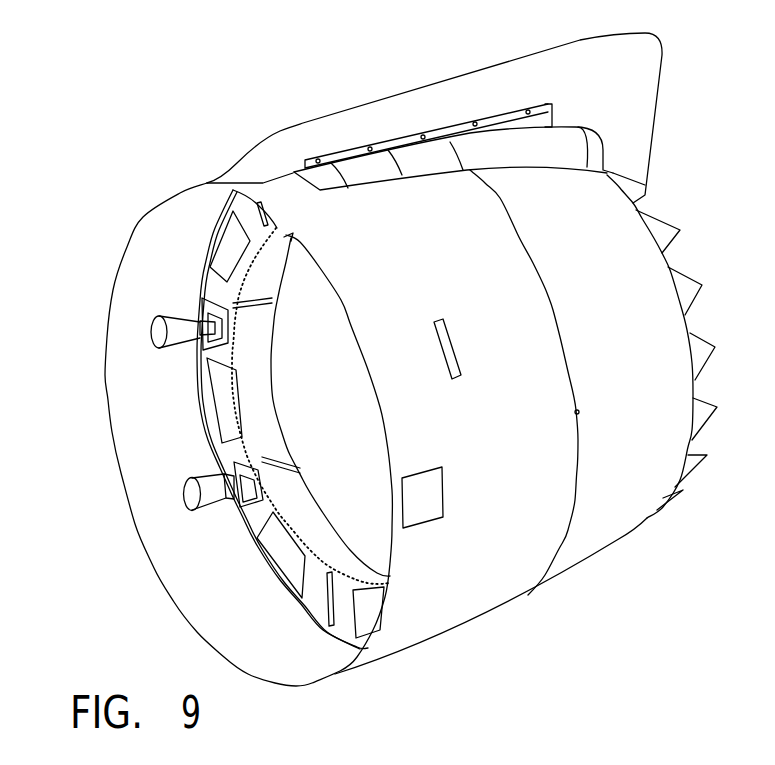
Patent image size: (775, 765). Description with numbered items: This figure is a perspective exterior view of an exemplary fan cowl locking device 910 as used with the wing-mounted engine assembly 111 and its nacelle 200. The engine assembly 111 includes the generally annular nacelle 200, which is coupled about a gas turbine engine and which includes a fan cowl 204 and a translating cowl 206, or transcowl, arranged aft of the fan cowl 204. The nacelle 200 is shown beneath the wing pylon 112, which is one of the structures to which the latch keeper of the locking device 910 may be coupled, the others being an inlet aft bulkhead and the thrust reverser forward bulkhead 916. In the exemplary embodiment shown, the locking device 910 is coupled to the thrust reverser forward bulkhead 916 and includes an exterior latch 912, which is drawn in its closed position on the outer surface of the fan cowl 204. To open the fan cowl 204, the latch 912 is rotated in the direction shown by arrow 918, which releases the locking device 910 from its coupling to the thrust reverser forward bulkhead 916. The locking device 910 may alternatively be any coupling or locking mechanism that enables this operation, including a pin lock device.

The wing-mounted engine assembly 111 is at (178, 107).
The wing pylon 112 is at (600, 62).
The nacelle 200 is at (568, 638).
The fan cowl 204 is at (450, 600).
The translating cowl 206 is at (610, 525).
The fan cowl locking device 910 is at (470, 390).
The exterior latch 912 is at (452, 374).
The thrust reverser forward bulkhead 916 is at (213, 287).
The arrow 918 is at (453, 280).